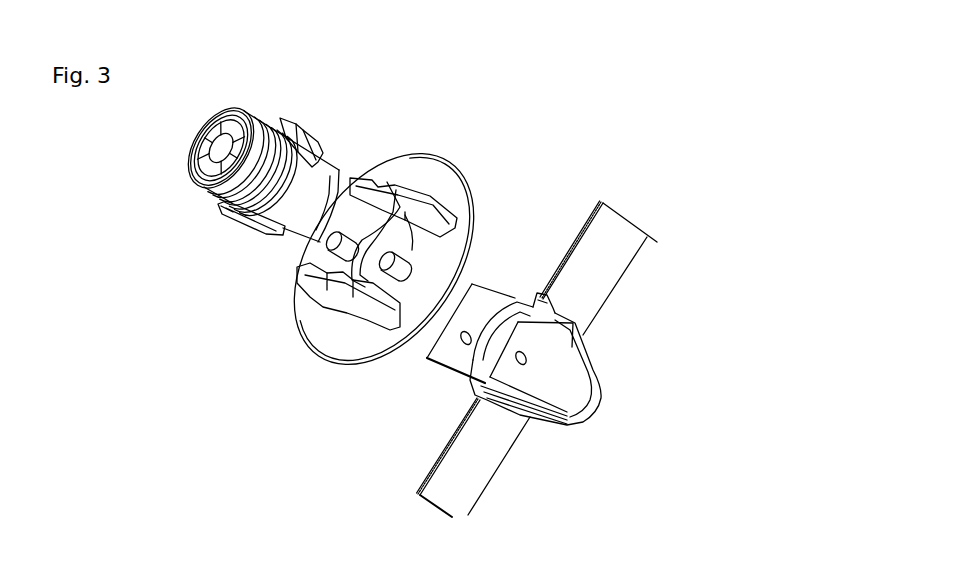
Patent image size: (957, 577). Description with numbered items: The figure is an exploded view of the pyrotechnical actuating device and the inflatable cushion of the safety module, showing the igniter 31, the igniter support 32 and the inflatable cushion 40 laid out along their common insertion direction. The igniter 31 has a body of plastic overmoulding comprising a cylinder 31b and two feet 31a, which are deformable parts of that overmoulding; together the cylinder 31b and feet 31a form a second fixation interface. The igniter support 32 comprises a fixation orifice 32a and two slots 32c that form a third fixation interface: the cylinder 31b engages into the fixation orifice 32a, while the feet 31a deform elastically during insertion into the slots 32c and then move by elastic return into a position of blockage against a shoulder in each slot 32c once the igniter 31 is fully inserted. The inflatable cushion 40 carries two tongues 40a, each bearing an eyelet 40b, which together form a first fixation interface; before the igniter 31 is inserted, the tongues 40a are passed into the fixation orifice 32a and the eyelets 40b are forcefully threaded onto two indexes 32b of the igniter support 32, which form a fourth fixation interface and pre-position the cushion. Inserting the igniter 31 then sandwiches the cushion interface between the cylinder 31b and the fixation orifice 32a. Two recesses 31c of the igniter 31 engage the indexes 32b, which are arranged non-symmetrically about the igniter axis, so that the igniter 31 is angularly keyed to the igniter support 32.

The igniter 31 is at (220, 185).
The feet 31a is at (225, 220).
The cylinder 31b is at (293, 218).
The recesses 31c is at (252, 153).
The igniter support 32 is at (460, 198).
The fixation orifice 32a is at (367, 242).
The indexes 32b is at (390, 275).
The slots 32c is at (390, 218).
The inflatable cushion 40 is at (600, 242).
The tongues 40a is at (515, 378).
The eyelets 40b is at (520, 353).